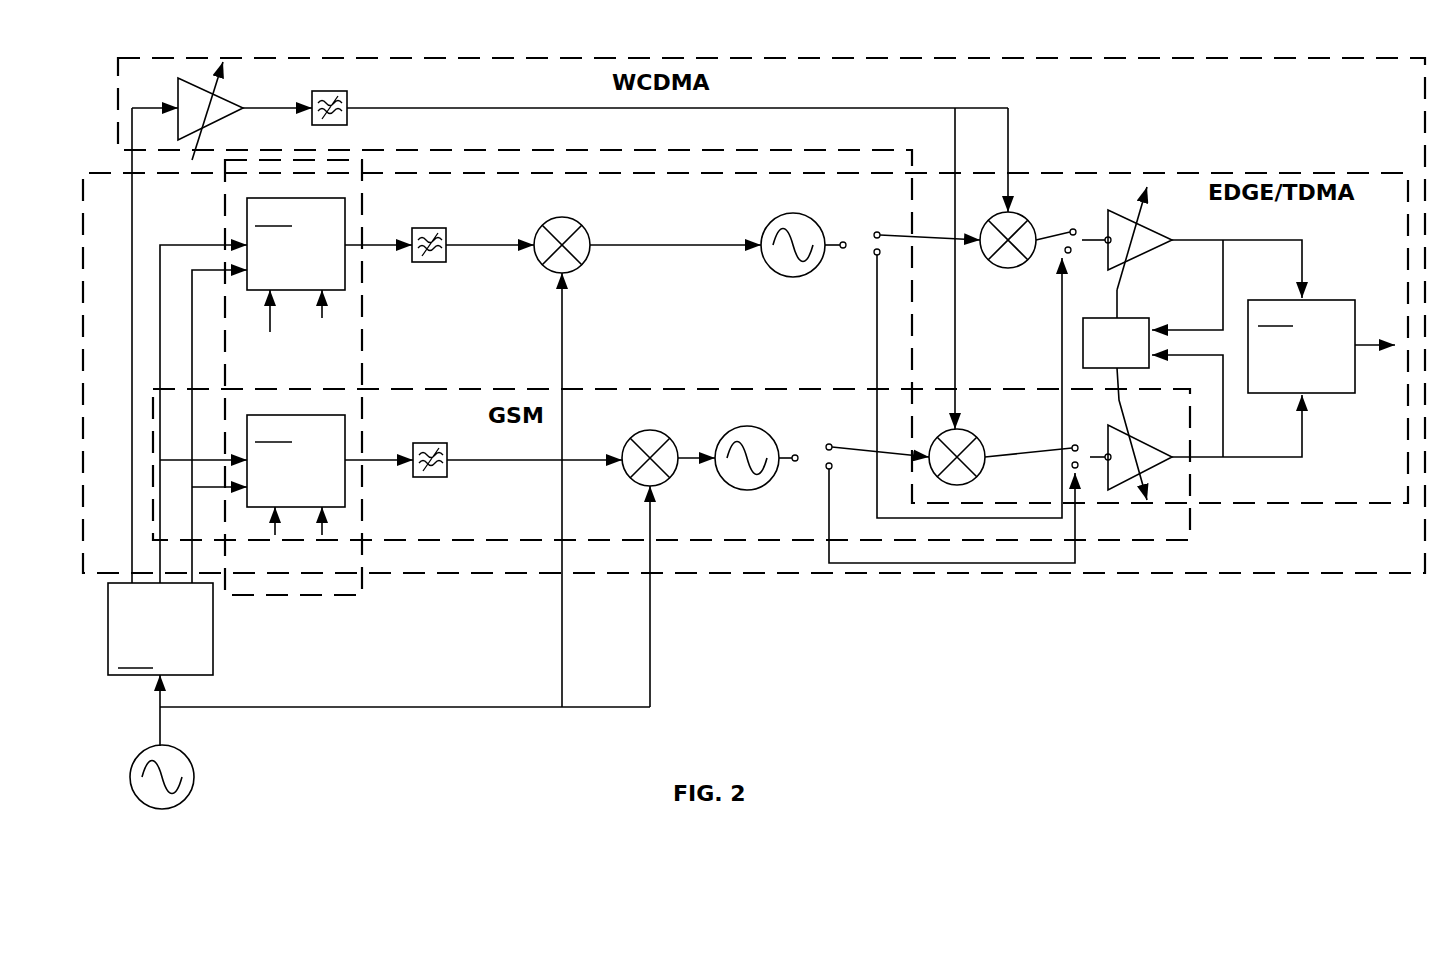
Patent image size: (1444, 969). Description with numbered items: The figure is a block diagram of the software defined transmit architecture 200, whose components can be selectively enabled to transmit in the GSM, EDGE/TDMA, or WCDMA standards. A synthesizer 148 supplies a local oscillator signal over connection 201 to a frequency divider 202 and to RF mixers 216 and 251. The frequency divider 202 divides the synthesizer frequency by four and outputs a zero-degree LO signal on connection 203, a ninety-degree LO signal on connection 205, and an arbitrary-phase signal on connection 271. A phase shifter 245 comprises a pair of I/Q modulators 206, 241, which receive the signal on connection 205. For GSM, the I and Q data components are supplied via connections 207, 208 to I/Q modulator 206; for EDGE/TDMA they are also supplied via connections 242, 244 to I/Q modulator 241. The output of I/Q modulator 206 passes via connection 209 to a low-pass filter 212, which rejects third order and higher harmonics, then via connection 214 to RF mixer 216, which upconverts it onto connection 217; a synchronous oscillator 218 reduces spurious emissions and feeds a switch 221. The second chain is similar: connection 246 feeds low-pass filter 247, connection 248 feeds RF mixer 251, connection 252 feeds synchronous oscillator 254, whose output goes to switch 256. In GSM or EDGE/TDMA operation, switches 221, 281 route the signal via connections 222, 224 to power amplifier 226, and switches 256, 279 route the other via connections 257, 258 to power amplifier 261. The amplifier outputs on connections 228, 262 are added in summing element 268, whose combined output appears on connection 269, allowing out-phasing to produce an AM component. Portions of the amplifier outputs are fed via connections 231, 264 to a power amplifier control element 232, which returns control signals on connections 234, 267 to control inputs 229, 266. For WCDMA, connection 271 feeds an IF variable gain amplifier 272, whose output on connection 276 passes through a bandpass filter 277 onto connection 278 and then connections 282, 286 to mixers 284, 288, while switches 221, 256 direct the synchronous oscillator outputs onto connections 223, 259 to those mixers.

The software defined transmit architecture 200 is at (178, 17).
The synthesizer 148 is at (130, 775).
The connection 201 is at (160, 723).
The frequency divider 202 is at (166, 629).
The connection 203 is at (158, 559).
The connection 205 is at (193, 560).
The I/Q modulator 206 is at (296, 461).
The connection 207 is at (275, 535).
The connection 208 is at (323, 533).
The connection 209 is at (369, 463).
The low-pass filter 212 is at (420, 443).
The connection 214 is at (502, 463).
The RF mixer 216 is at (627, 474).
The connection 217 is at (686, 452).
The synchronous oscillator 218 is at (752, 491).
The switch 221 is at (798, 452).
The connection 222 is at (826, 478).
The connection 223 is at (890, 452).
The connection 224 is at (1000, 460).
The power amplifier 226 is at (1155, 464).
The connection 228 is at (1262, 458).
The control input 229 is at (1124, 420).
The connection 231 is at (1223, 402).
The power amplifier control element 232 is at (1083, 343).
The connection 234 is at (1140, 379).
The I/Q modulator 241 is at (296, 244).
The connection 242 is at (270, 320).
The connection 244 is at (322, 318).
The phase shifter 245 is at (275, 380).
The connection 246 is at (372, 248).
The low-pass filter 247 is at (420, 228).
The connection 248 is at (464, 247).
The RF mixer 251 is at (575, 268).
The connection 252 is at (634, 242).
The synchronous oscillator 254 is at (786, 213).
The switch 256 is at (843, 242).
The connection 257 is at (877, 290).
The connection 258 is at (1057, 235).
The connection 259 is at (935, 238).
The power amplifier 261 is at (1143, 222).
The connection 262 is at (1205, 240).
The connection 264 is at (1223, 258).
The control input 266 is at (1117, 278).
The connection 267 is at (1117, 302).
The summing element 268 is at (1301, 346).
The connection 269 is at (1381, 340).
The connection 271 is at (130, 468).
The IF variable gain amplifier 272 is at (221, 95).
The connection 276 is at (253, 108).
The bandpass filter 277 is at (326, 91).
The connection 278 is at (390, 108).
The switch 279 is at (1097, 240).
The switch 281 is at (1090, 457).
The connection 282 is at (957, 288).
The mixer 284 is at (970, 432).
The connection 286 is at (1008, 185).
The mixer 288 is at (983, 264).